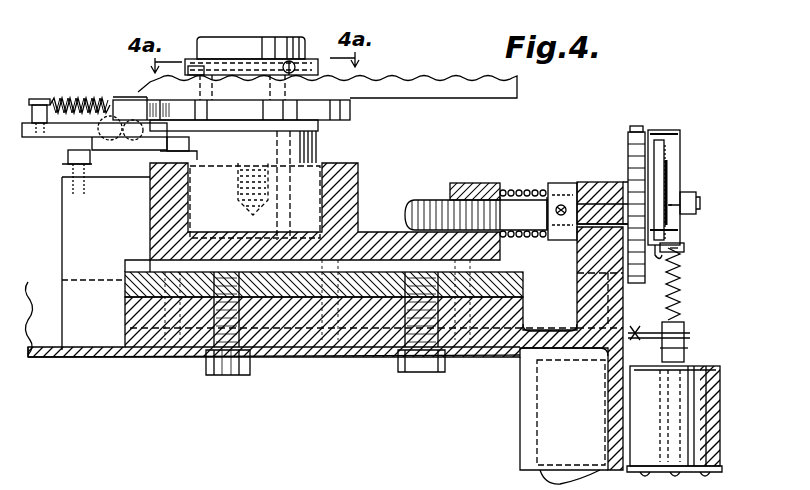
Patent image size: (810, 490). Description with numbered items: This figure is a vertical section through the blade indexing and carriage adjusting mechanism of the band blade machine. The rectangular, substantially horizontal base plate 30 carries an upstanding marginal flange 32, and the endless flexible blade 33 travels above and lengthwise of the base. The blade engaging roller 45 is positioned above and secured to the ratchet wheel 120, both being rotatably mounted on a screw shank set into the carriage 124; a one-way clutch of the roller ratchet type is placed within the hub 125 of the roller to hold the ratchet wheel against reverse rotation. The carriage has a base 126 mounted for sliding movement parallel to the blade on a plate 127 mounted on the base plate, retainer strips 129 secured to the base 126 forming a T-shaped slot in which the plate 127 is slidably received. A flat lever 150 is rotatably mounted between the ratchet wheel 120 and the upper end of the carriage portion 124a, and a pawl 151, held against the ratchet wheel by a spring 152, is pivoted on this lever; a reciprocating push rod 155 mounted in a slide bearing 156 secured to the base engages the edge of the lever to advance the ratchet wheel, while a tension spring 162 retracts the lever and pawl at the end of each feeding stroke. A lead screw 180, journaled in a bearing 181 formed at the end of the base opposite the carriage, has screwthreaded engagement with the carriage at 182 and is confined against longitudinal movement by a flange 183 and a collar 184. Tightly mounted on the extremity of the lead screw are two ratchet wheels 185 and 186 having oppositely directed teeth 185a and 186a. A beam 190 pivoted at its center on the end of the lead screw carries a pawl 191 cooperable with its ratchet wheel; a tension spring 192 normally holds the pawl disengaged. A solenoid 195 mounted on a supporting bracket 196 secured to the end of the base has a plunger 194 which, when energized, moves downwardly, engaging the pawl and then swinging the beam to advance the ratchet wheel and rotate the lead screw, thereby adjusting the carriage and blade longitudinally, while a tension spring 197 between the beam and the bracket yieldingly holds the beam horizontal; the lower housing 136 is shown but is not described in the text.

The base plate 30 is at (56, 358).
The upstanding marginal flange 32 is at (42, 285).
The blade 33 is at (420, 70).
The blade engaging roller 45 is at (300, 60).
The ratchet wheel 120 is at (368, 113).
The carriage 124 is at (358, 172).
The carriage portion 124a is at (318, 142).
The hub 125 is at (252, 37).
The carriage base 126 is at (150, 247).
The plate 127 is at (125, 287).
The retainer strips 129 is at (125, 313).
The lower housing 136 is at (496, 419).
The flat lever 150 is at (322, 124).
The pawl 151 is at (100, 124).
The spring 152 is at (98, 98).
The push rod 155 is at (118, 150).
The slide bearing 156 is at (62, 172).
The tension spring 162 is at (28, 100).
The lead screw 180 is at (420, 200).
The bearing 181 is at (612, 183).
The screwthreaded engagement 182 is at (465, 183).
The flange 183 is at (625, 182).
The collar 184 is at (575, 182).
The ratchet wheel 185 is at (632, 132).
The teeth 185a is at (638, 126).
The ratchet wheel 186 is at (655, 130).
The teeth 186a is at (656, 283).
The beam 190 is at (676, 180).
The pawl 191 is at (680, 246).
The tension spring 192 is at (668, 170).
The solenoid plunger 194 is at (686, 324).
The solenoid 195 is at (716, 384).
The supporting bracket 196 is at (722, 466).
The tension spring 197 is at (510, 190).